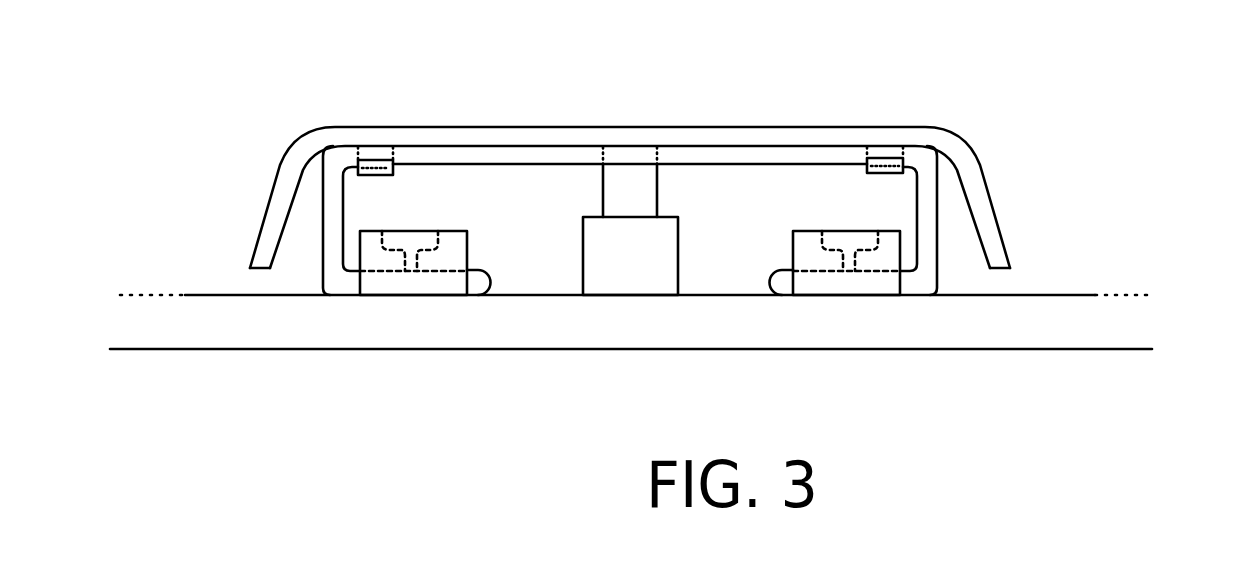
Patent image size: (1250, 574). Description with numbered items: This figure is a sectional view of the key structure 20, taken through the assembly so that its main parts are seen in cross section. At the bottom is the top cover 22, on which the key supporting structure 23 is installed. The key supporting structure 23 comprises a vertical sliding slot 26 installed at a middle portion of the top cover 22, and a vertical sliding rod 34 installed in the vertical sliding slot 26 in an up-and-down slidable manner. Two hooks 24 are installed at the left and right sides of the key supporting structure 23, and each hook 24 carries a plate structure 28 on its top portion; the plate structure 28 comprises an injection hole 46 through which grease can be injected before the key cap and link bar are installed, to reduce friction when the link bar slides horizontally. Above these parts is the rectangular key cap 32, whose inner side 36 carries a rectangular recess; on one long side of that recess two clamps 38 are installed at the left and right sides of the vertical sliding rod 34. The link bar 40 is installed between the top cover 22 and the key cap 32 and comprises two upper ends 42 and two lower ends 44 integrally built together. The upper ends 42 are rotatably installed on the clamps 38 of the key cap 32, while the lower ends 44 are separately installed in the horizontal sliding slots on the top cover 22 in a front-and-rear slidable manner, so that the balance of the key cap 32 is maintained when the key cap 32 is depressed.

The key structure 20 is at (1118, 60).
The top cover 22 is at (268, 330).
The key supporting structure 23 is at (557, 262).
The hook 24 is at (405, 278).
The vertical sliding slot 26 is at (637, 270).
The plate structure 28 is at (453, 253).
The key cap 32 is at (483, 143).
The vertical sliding rod 34 is at (630, 180).
The inner side 36 is at (547, 147).
The clamp 38 is at (372, 157).
The link bar 40 is at (723, 158).
The upper end 42 is at (343, 160).
The lower end 44 is at (343, 283).
The injection hole 46 is at (415, 240).